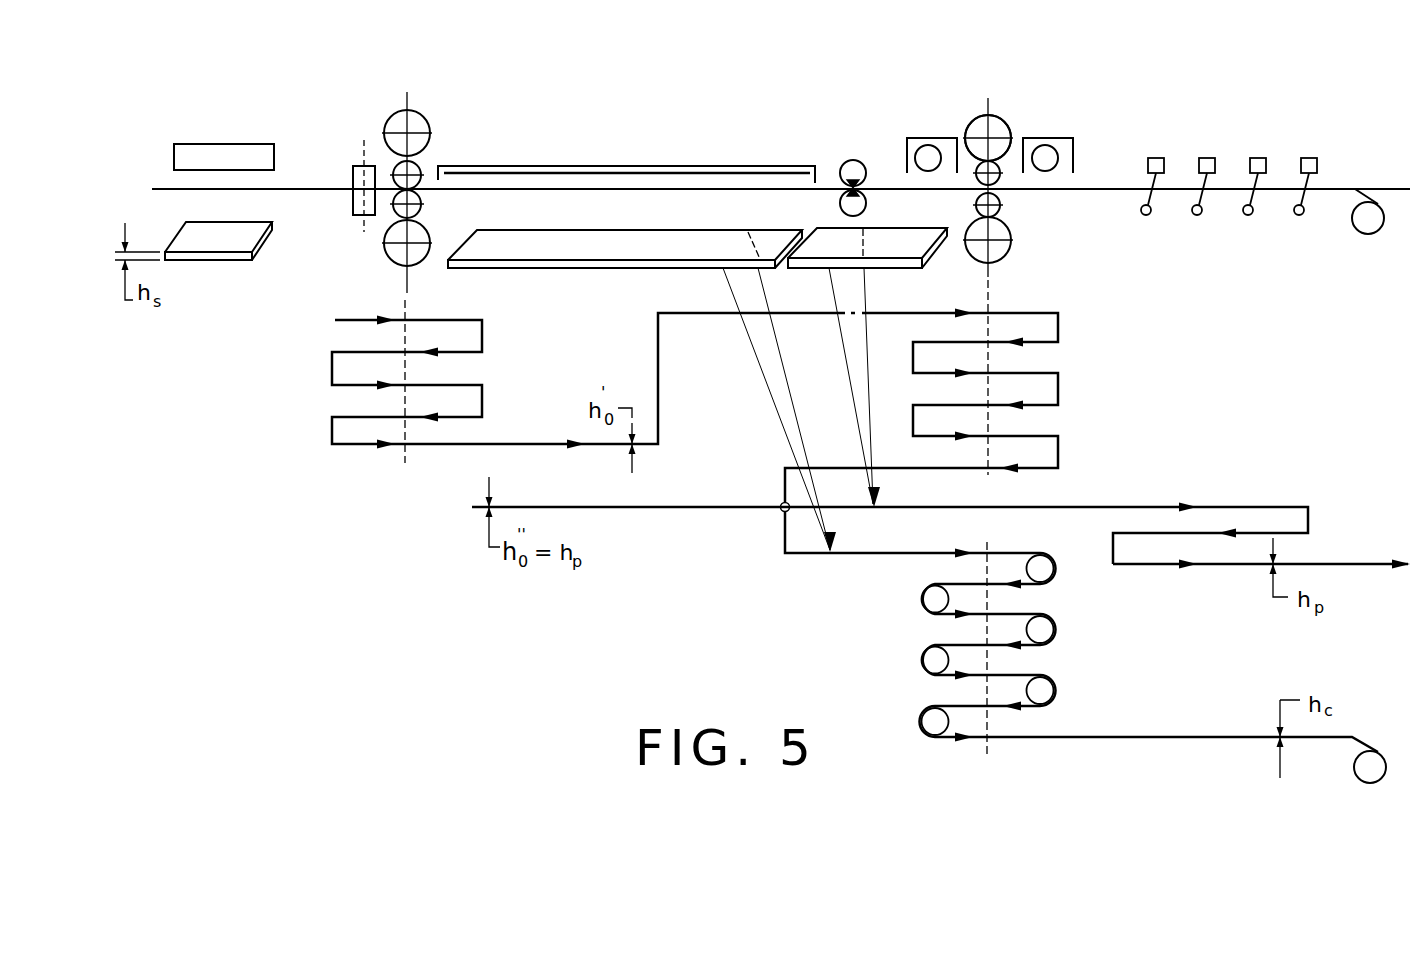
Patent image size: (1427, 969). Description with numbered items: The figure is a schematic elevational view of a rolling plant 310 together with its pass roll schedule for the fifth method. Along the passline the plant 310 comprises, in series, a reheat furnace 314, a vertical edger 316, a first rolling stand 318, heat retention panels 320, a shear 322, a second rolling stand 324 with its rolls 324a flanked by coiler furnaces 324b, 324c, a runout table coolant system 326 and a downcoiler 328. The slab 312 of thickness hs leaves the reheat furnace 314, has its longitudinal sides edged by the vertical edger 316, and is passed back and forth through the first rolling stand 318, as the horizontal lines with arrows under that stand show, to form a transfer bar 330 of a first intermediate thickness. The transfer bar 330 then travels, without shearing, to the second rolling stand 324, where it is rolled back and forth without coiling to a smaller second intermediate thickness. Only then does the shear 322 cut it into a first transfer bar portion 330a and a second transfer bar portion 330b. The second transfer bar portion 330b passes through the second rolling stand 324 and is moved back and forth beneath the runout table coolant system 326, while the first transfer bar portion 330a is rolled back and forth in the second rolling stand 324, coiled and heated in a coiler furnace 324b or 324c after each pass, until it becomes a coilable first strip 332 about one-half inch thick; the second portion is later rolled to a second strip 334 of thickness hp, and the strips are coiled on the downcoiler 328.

The rolling plant 310 is at (797, 88).
The slab 312 is at (212, 262).
The reheat furnace 314 is at (228, 152).
The vertical edger 316 is at (358, 172).
The first rolling stand 318 is at (415, 122).
The heat retention panels 320 is at (575, 163).
The shear 322 is at (850, 162).
The second rolling stand 324 is at (999, 106).
The second rolling stand roll 324a is at (1006, 122).
The coiler furnace 324b is at (930, 158).
The coiler furnace 324c is at (1048, 152).
The runout table coolant system 326 is at (1224, 131).
The downcoiler 328 is at (1362, 227).
The transfer bar 330 is at (700, 293).
The first transfer bar portion 330a is at (570, 250).
The second transfer bar portion 330b is at (887, 240).
The first strip 332 is at (1095, 739).
The second strip 334 is at (1312, 560).